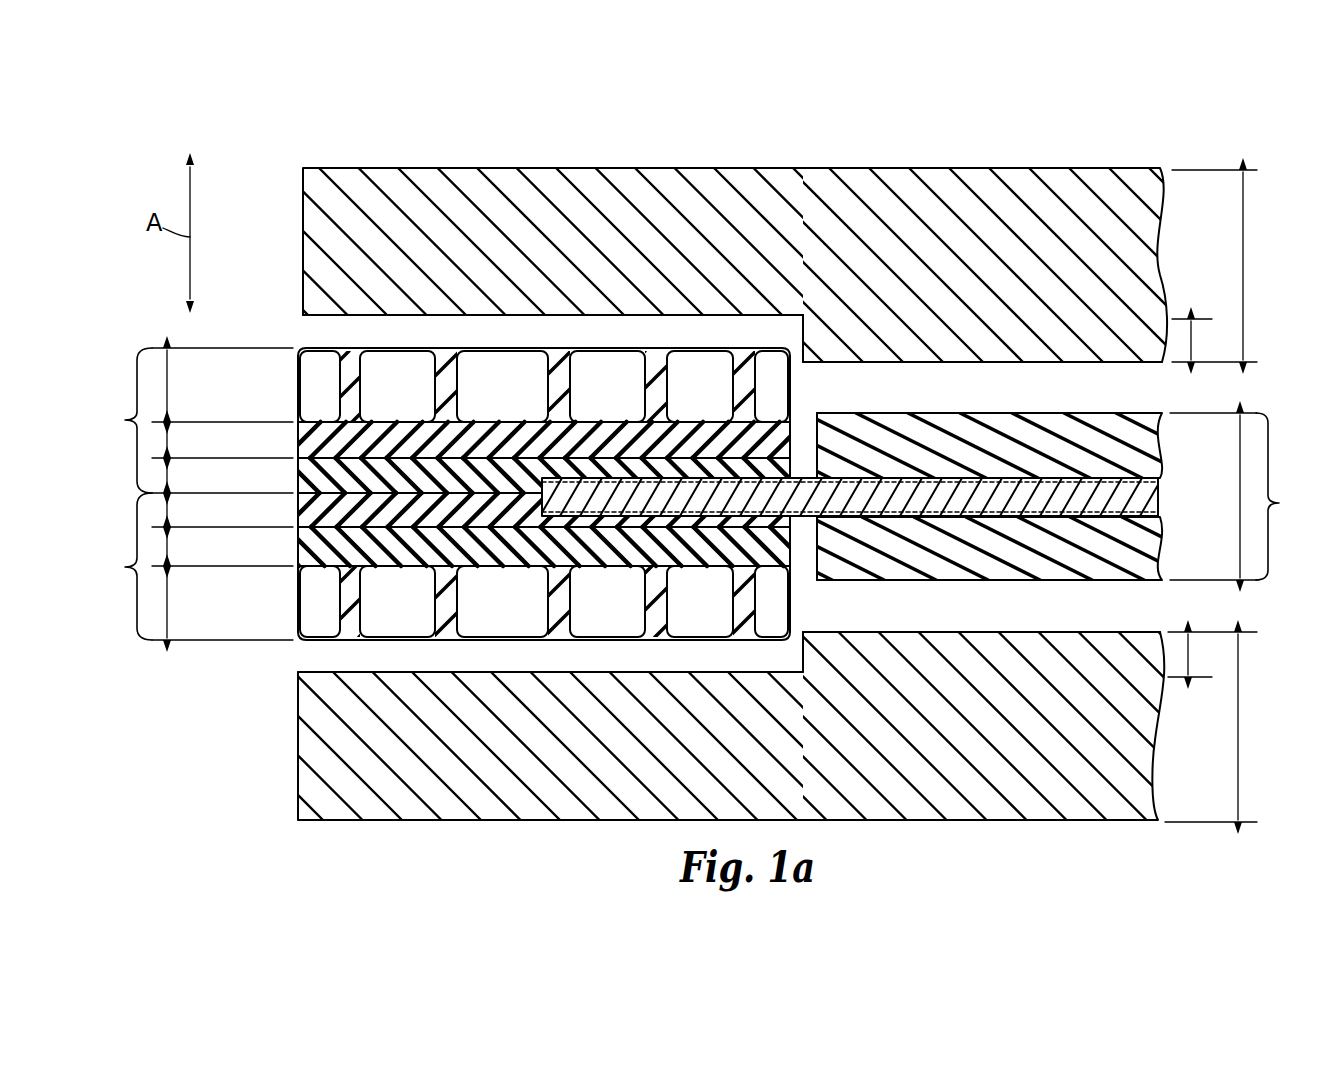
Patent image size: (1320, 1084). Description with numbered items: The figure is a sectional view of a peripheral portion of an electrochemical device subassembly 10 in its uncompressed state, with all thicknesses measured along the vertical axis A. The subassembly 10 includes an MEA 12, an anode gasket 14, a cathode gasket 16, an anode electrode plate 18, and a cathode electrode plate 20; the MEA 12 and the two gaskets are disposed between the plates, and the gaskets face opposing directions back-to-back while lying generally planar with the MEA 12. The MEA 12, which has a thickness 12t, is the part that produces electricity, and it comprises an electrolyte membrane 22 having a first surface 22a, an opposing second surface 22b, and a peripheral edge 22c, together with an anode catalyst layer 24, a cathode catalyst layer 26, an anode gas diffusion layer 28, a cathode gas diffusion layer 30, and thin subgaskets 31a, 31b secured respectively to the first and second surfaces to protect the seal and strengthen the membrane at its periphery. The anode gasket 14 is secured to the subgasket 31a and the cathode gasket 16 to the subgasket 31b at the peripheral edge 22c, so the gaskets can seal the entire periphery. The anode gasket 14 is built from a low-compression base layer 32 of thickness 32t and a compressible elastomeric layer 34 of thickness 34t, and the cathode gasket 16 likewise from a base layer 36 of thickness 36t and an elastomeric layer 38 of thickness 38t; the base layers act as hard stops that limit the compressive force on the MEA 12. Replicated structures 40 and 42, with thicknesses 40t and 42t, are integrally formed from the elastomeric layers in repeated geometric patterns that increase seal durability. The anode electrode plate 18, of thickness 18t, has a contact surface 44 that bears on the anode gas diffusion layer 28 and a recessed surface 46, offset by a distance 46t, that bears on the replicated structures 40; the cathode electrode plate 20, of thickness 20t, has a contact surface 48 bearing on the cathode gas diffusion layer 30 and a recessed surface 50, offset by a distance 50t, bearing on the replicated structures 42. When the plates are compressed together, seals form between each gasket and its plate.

The subassembly 10 is at (1112, 149).
The MEA 12 is at (1287, 496).
The thickness of MEA 12t is at (1216, 496).
The anode gasket 14 is at (441, 420).
The cathode gasket 16 is at (440, 566).
The anode electrode plate 18 is at (1152, 206).
The thickness of anode electrode plate 18t is at (1218, 266).
The cathode electrode plate 20 is at (1150, 786).
The thickness of cathode electrode plate 20t is at (1212, 727).
The electrolyte membrane 22 is at (1166, 503).
The first surface 22a is at (992, 478).
The second surface 22b is at (992, 516).
The peripheral edge 22c is at (704, 478).
The anode catalyst layer 24 is at (1160, 483).
The cathode catalyst layer 26 is at (1160, 516).
The anode gas diffusion layer 28 is at (1107, 428).
The cathode gas diffusion layer 30 is at (1105, 567).
The subgasket 31a is at (797, 500).
The subgasket 31b is at (797, 500).
The base layer 32 is at (300, 478).
The layer thickness of base layer 32t is at (170, 473).
The elastomeric layer 34 is at (300, 443).
The layer thickness of elastomeric layer 34t is at (170, 438).
The base layer 36 is at (300, 515).
The layer thickness of base layer 36t is at (170, 512).
The elastomeric layer 38 is at (300, 551).
The layer thickness of elastomeric layer 38t is at (170, 547).
The replicated structures 40 is at (290, 387).
The thickness of replicated structures 40t is at (168, 384).
The replicated structures 42 is at (290, 606).
The thickness of replicated structures 42t is at (168, 603).
The contact surface 44 is at (1055, 363).
The recessed surface 46 is at (320, 316).
The offset distance 46t is at (1196, 340).
The contact surface 48 is at (1055, 632).
The recessed surface 50 is at (306, 671).
The offset distance 50t is at (1192, 655).